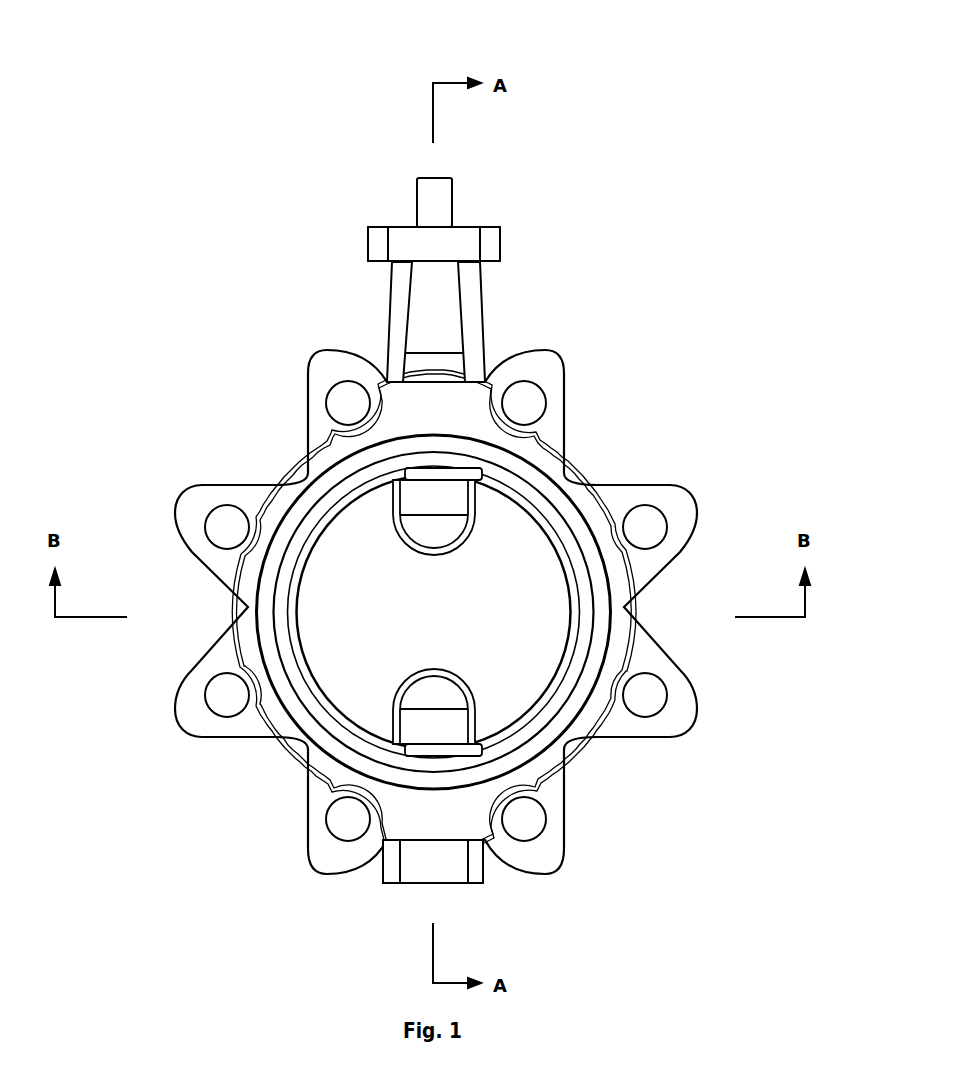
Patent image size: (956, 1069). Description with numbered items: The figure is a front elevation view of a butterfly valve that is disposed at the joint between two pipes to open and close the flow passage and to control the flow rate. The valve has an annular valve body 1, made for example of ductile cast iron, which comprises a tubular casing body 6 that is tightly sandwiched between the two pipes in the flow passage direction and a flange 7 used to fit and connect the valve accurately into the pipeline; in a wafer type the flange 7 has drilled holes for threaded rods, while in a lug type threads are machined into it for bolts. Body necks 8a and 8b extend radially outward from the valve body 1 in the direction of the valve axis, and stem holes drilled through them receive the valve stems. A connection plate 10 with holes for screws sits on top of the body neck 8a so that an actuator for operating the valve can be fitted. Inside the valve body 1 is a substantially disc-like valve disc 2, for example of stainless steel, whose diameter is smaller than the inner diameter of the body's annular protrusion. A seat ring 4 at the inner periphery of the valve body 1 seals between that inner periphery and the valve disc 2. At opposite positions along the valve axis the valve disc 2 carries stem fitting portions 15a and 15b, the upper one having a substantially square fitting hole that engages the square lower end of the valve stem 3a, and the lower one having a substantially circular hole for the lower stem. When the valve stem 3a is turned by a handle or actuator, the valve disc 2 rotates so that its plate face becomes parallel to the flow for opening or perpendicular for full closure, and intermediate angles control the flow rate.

The valve body 1 is at (585, 464).
The valve disc 2 is at (530, 665).
The valve stem 3a is at (443, 210).
The seat ring 4 is at (553, 725).
The tubular casing body 6 is at (540, 763).
The flange 7 is at (548, 410).
The body neck 8a is at (443, 312).
The body neck 8b is at (443, 865).
The connection plate 10 is at (443, 245).
The stem fitting portion 15a is at (417, 530).
The stem fitting portion 15b is at (422, 697).